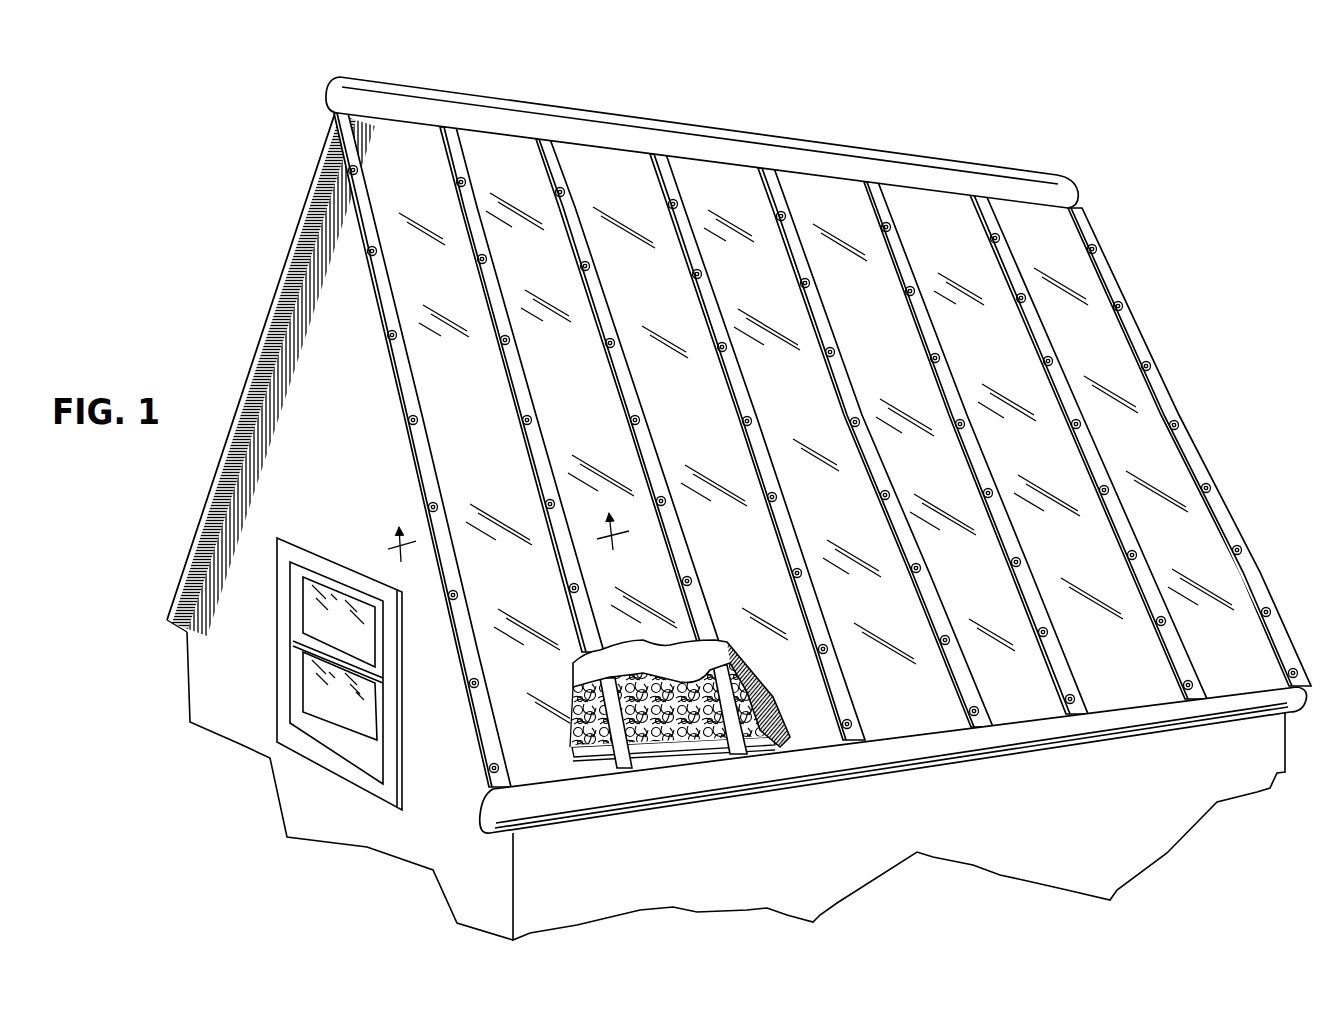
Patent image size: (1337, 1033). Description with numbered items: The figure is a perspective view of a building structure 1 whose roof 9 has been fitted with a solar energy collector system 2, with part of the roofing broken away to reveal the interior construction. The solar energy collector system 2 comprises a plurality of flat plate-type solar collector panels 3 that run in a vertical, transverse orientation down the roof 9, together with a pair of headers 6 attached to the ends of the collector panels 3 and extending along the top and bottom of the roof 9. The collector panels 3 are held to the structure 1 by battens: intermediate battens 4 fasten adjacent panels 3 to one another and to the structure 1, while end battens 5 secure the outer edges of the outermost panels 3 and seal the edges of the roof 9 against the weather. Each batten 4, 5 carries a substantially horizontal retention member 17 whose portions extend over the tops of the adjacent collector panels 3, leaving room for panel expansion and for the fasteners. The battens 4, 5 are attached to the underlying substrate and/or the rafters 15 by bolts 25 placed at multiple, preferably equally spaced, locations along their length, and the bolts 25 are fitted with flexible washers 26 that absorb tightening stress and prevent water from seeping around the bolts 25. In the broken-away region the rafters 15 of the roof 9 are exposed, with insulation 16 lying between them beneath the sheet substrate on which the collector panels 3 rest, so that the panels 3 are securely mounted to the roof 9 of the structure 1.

The building structure 1 is at (183, 704).
The solar energy collector system 2 is at (952, 216).
The solar collector panels 3 is at (517, 172).
The battens 4 is at (509, 550).
The end battens 5 is at (418, 464).
The headers 6 is at (868, 163).
The roof 9 is at (290, 255).
The rafters 15 is at (630, 770).
The insulation 16 is at (720, 752).
The retention member 17 is at (640, 658).
The bolts 25 is at (362, 178).
The flexible washers 26 is at (358, 170).